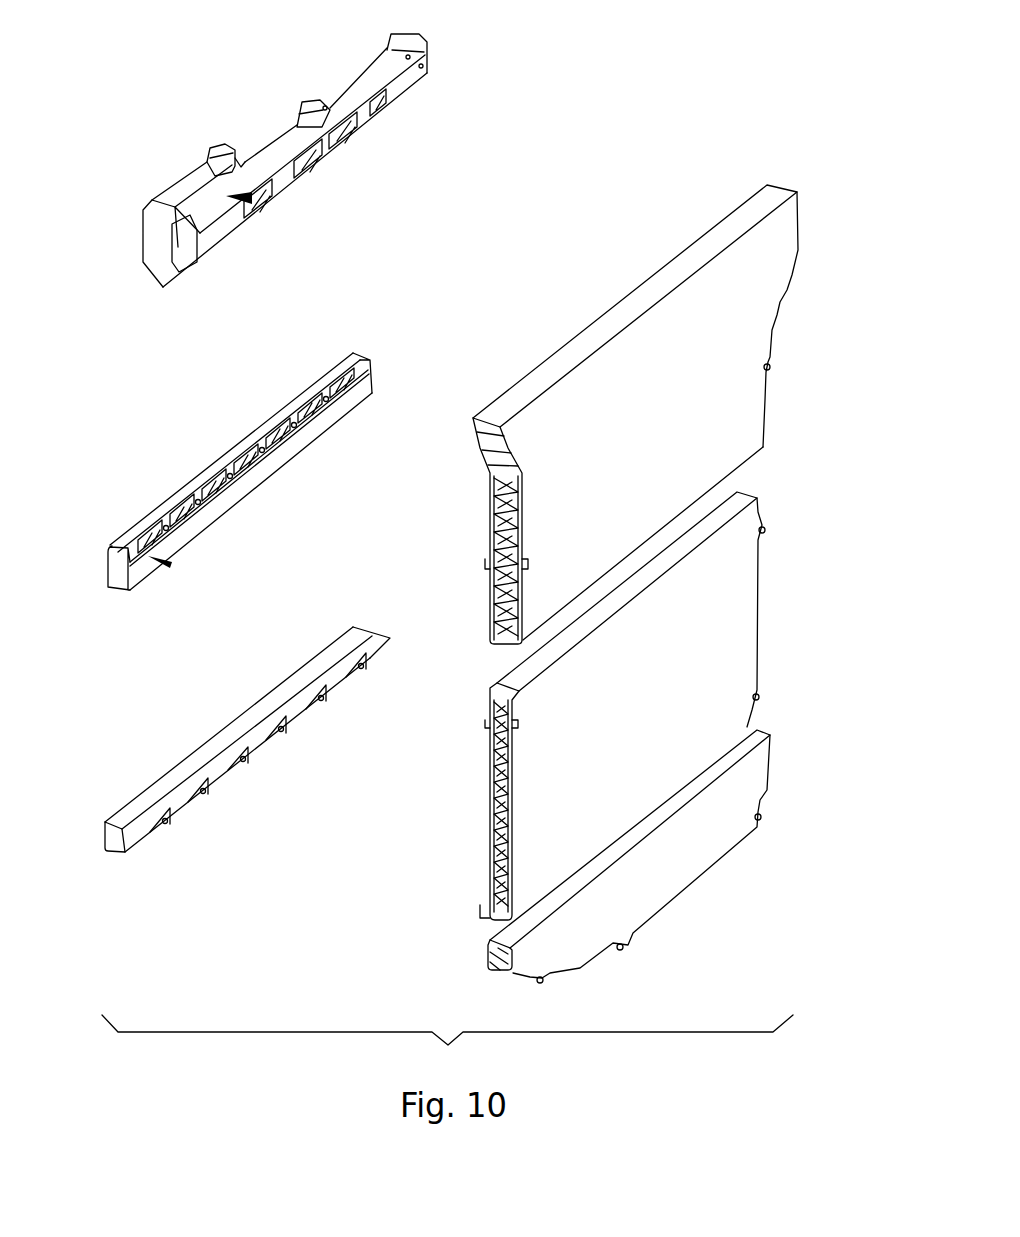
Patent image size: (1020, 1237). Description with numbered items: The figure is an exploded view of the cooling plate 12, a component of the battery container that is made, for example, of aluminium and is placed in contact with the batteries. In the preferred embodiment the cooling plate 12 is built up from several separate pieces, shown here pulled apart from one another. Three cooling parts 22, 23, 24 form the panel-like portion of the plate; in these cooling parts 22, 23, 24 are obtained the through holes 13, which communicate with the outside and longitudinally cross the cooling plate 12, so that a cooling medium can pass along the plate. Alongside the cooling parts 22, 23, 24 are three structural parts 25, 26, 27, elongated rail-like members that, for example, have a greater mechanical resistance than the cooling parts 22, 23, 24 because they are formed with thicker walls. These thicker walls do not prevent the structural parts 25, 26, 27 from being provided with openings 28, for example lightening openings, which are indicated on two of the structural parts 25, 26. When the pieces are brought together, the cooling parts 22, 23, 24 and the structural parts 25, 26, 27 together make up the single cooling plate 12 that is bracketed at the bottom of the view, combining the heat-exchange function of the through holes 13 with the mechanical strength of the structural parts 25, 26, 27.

The cooling plate 12 is at (447, 1044).
The through holes 13 is at (493, 613).
The cooling part 22 is at (629, 441).
The cooling part 23 is at (628, 729).
The cooling part 24 is at (631, 896).
The structural part 25 is at (362, 85).
The structural part 26 is at (299, 396).
The structural part 27 is at (218, 743).
The openings 28 is at (252, 198).